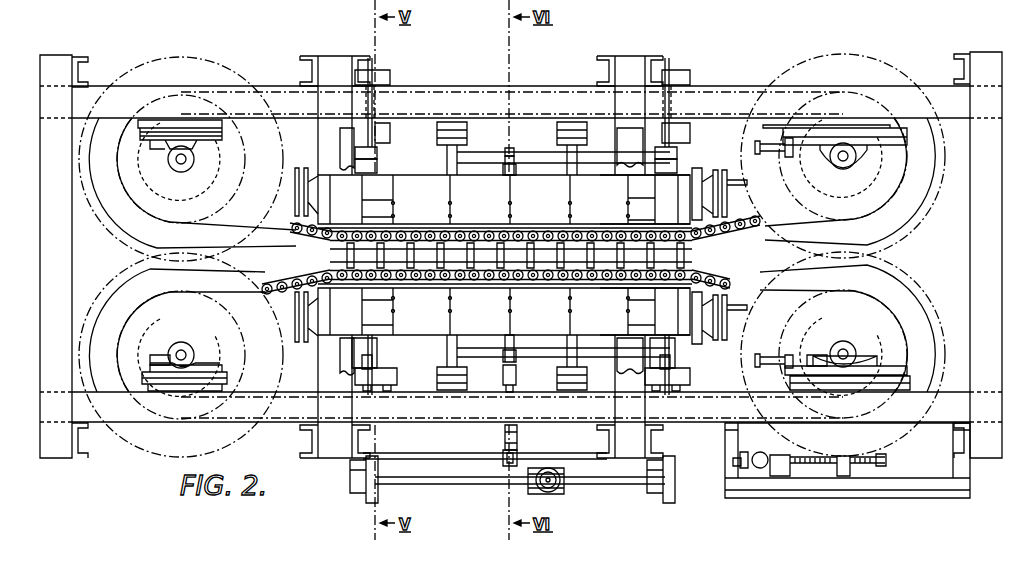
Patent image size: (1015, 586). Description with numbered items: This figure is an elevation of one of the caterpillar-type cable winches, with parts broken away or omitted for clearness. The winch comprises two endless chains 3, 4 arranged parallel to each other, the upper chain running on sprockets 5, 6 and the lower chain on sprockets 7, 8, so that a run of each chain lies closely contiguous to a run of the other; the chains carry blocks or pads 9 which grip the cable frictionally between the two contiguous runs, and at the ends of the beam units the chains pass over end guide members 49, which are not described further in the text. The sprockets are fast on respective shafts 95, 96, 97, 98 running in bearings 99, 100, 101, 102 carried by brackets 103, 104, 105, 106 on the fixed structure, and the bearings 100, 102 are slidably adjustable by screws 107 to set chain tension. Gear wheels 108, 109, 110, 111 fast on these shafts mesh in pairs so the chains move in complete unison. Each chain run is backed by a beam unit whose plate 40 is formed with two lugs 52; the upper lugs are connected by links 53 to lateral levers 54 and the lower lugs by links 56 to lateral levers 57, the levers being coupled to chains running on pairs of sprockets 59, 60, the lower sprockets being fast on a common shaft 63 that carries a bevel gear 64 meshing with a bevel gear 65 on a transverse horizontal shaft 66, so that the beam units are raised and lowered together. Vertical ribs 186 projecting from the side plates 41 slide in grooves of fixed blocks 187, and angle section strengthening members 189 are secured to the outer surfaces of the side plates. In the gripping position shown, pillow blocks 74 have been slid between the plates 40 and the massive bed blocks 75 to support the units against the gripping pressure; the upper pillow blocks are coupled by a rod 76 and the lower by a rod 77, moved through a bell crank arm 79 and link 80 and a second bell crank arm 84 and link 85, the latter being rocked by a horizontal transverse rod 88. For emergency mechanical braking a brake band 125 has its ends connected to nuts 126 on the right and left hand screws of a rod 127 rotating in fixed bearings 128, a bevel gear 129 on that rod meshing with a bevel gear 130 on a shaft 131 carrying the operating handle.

The endless chain 3 is at (248, 212).
The endless chain 4 is at (258, 418).
The sprocket 5 is at (210, 166).
The sprocket 6 is at (879, 163).
The sprocket 7 is at (200, 317).
The sprocket 8 is at (880, 300).
The blocks or pads 9 is at (270, 270).
The plate 40 is at (430, 176).
The side plates 41 is at (612, 182).
The end pulley 49 is at (748, 183).
The lug 52 is at (378, 165).
The link 53 is at (378, 152).
The lateral lever 54 is at (380, 130).
The link 56 is at (380, 358).
The lateral lever 57 is at (397, 376).
The sprocket 59 is at (369, 60).
The sprocket 60 is at (366, 490).
The shaft 63 is at (480, 482).
The bevel gear 64 is at (540, 494).
The bevel gear 65 is at (556, 487).
The transverse horizontal shaft 66 is at (548, 472).
The pillow block 74 is at (460, 160).
The bed block 75 is at (452, 122).
The rod 76 is at (515, 158).
The rod 77 is at (516, 360).
The arm 79 is at (517, 167).
The link 80 is at (514, 150).
The arm 84 is at (505, 378).
The link 85 is at (503, 437).
The horizontal transverse rod 88 is at (503, 458).
The shaft 95 is at (178, 160).
The shaft 96 is at (845, 170).
The shaft 97 is at (190, 348).
The shaft 98 is at (845, 340).
The bearing 99 is at (150, 150).
The bearing 100 is at (800, 160).
The bearing 101 is at (172, 358).
The bearing 102 is at (833, 346).
The bracket 103 is at (222, 130).
The bracket 104 is at (862, 125).
The bracket 105 is at (226, 382).
The bracket 106 is at (840, 378).
The screw 107 is at (768, 142).
The gear wheel 108 is at (125, 84).
The gear wheel 109 is at (866, 58).
The gear wheel 110 is at (127, 440).
The gear wheel 111 is at (900, 437).
The brake band 125 is at (887, 455).
The nut 126 is at (822, 458).
The rod 127 is at (830, 478).
The fixed bearing 128 is at (778, 478).
The bevel gear 129 is at (760, 452).
The bevel gear 130 is at (748, 458).
The shaft 131 is at (738, 464).
The vertical rib 186 is at (450, 194).
The block 187 is at (352, 145).
The angle section strengthening member 189 is at (510, 210).